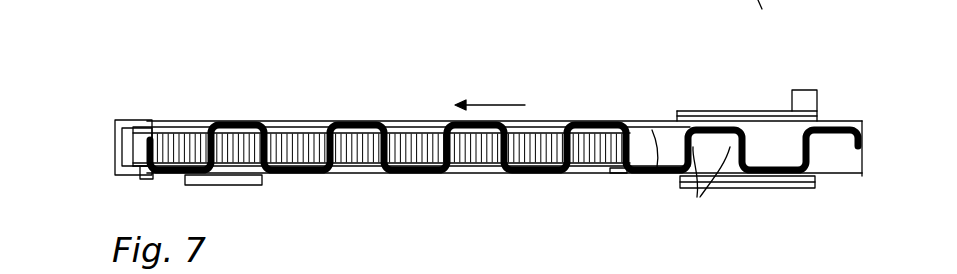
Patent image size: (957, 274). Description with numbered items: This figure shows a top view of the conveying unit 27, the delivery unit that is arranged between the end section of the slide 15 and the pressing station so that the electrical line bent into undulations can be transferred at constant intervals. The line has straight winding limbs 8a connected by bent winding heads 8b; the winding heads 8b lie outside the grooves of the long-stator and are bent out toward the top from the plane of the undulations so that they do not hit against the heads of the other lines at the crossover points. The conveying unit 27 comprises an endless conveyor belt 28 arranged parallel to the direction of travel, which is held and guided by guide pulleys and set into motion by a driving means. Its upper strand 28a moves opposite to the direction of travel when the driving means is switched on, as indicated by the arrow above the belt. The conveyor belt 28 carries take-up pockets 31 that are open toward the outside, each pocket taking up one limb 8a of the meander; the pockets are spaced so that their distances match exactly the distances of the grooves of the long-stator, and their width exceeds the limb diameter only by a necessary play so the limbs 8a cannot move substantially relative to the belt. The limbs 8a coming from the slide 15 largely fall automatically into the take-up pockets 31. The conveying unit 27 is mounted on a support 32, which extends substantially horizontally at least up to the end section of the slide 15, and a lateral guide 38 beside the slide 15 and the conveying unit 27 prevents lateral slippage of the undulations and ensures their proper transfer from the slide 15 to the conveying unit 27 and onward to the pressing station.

The conveying unit 27 is at (366, 93).
The conveyor belt 28 is at (543, 127).
The upper strand 28a is at (301, 140).
The take-up pockets 31 is at (393, 143).
The support 32 is at (112, 149).
The lateral guide 38 is at (737, 115).
The limbs 8a is at (697, 197).
The winding heads 8b is at (530, 175).
The slide 15 is at (828, 168).